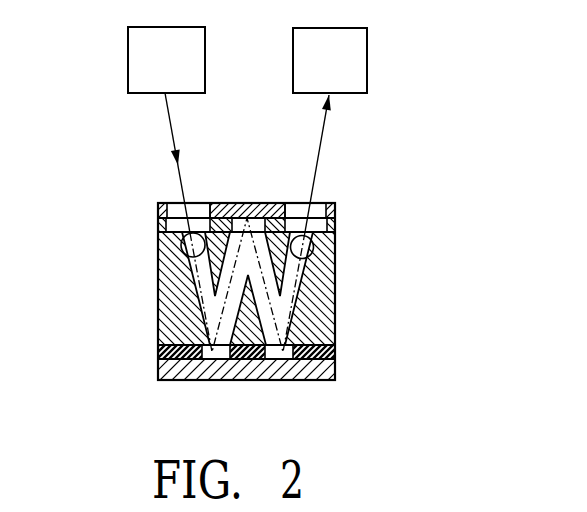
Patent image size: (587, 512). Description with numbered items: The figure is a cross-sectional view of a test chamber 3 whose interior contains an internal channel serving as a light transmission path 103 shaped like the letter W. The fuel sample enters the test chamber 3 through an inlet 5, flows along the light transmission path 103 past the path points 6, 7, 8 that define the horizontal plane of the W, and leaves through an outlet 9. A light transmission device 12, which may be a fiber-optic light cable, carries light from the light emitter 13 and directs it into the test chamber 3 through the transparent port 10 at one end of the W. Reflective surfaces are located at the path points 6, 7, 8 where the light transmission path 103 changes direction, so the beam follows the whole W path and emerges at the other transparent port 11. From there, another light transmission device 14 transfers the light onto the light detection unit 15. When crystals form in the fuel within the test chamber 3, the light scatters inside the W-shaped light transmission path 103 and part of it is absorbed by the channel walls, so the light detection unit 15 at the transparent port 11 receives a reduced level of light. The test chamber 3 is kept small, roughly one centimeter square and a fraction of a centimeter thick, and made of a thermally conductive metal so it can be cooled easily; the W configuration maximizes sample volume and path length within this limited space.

The test chamber 3 is at (175, 322).
The inlet 5 is at (182, 247).
The path point 6 is at (212, 362).
The path point 7 is at (248, 207).
The path point 8 is at (283, 362).
The outlet 9 is at (316, 248).
The transparent port 10 is at (178, 204).
The transparent port 11 is at (315, 205).
The light transmission device 12 is at (171, 130).
The light emitter 13 is at (127, 56).
The light transmission device 14 is at (322, 133).
The light detection unit 15 is at (368, 57).
The light transmission path 103 is at (195, 337).